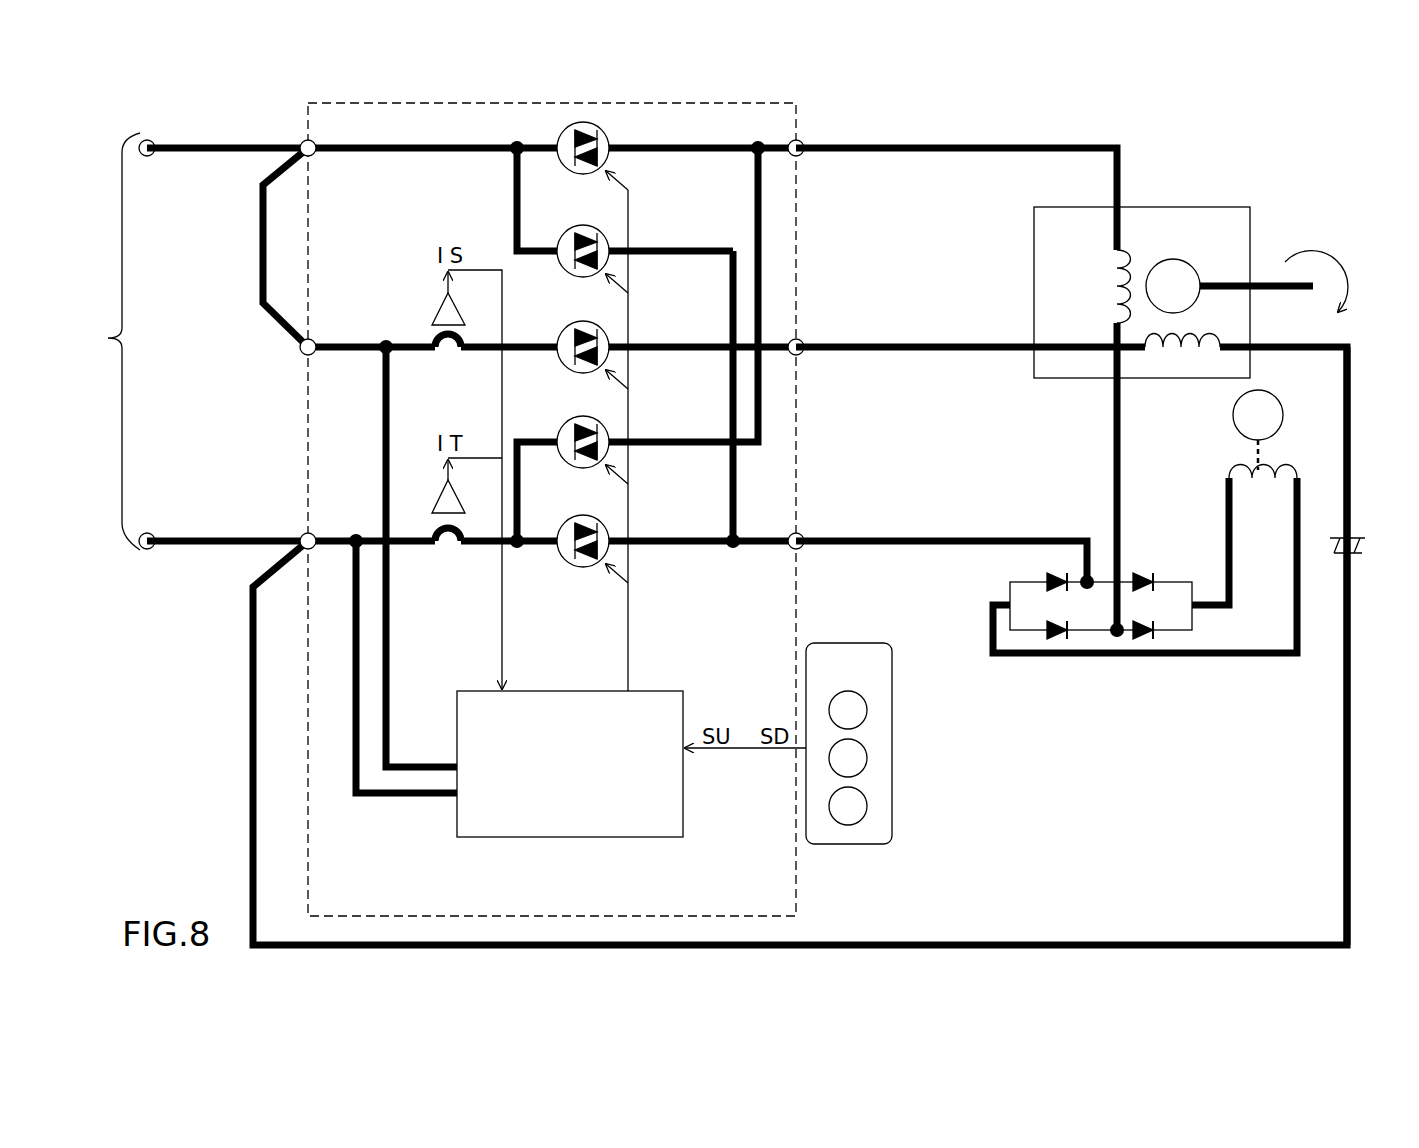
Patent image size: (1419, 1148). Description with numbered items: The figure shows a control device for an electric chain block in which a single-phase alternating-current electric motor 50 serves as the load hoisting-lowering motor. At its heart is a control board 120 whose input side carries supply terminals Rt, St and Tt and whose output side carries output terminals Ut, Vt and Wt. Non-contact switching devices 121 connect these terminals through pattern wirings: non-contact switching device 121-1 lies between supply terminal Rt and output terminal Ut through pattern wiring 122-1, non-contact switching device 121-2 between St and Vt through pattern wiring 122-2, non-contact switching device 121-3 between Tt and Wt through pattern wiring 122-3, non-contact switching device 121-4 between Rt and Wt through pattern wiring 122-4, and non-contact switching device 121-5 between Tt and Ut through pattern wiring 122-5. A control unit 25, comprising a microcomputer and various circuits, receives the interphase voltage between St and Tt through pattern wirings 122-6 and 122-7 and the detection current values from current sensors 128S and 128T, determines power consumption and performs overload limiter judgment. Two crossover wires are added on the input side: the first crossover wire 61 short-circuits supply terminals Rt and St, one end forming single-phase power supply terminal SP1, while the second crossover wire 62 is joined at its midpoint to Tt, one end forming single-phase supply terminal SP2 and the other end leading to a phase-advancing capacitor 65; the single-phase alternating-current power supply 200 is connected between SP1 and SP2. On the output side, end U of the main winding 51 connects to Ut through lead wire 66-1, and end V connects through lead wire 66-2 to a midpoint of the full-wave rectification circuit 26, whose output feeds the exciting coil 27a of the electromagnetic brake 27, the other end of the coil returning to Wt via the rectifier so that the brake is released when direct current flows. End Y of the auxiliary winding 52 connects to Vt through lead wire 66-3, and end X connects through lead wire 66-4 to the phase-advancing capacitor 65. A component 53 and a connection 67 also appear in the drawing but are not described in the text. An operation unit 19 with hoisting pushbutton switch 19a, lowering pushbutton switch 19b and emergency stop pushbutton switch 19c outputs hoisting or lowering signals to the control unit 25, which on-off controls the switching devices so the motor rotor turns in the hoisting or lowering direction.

The single-phase alternating-current power supply 200 is at (102, 341).
The control board 120 is at (675, 100).
The non-contact switching devices 121 is at (585, 120).
The non-contact switching device 121-1 is at (603, 136).
The non-contact switching device 121-2 is at (603, 335).
The non-contact switching device 121-3 is at (603, 530).
The non-contact switching device 121-4 is at (603, 239).
The non-contact switching device 121-5 is at (603, 430).
The pattern wiring 122-1 is at (352, 145).
The pattern wiring 122-2 is at (340, 344).
The pattern wiring 122-3 is at (332, 538).
The pattern wiring 122-4 is at (736, 400).
The pattern wiring 122-5 is at (762, 256).
The pattern wiring 122-6 is at (385, 720).
The pattern wiring 122-7 is at (355, 760).
The current sensor 128S is at (450, 353).
The current sensor 128T is at (450, 547).
The control unit 25 is at (577, 838).
The operation unit 19 is at (891, 743).
The hoisting pushbutton switch 19a is at (866, 764).
The lowering pushbutton switch 19b is at (866, 813).
The emergency stop pushbutton switch 19c is at (868, 708).
The single-phase alternating-current electric motor 50 is at (1191, 267).
The main winding 51 is at (1112, 295).
The auxiliary winding 52 is at (1186, 360).
The capacitor 53 is at (1190, 262).
The first crossover wire 61 is at (262, 295).
The second crossover wire 62 is at (252, 618).
The lead wire 66-1 is at (1052, 140).
The lead wire 66-2 is at (1114, 424).
The lead wire 66-3 is at (952, 344).
The lead wire 66-4 is at (1352, 468).
The phase-advancing capacitor 65 is at (1358, 535).
The wire 67 is at (856, 537).
The full-wave rectification circuit 26 is at (1089, 638).
The electromagnetic brake 27 is at (1287, 418).
The exciting coil 27a is at (1238, 470).
The single-phase alternating-current power supply terminal SP1 is at (147, 139).
The single-phase supply terminal SP2 is at (147, 551).
The supply terminal Rt is at (300, 140).
The supply terminal St is at (300, 354).
The supply terminal Tt is at (300, 534).
The output terminal Ut is at (810, 136).
The output terminal Vt is at (809, 334).
The output terminal Wt is at (810, 527).